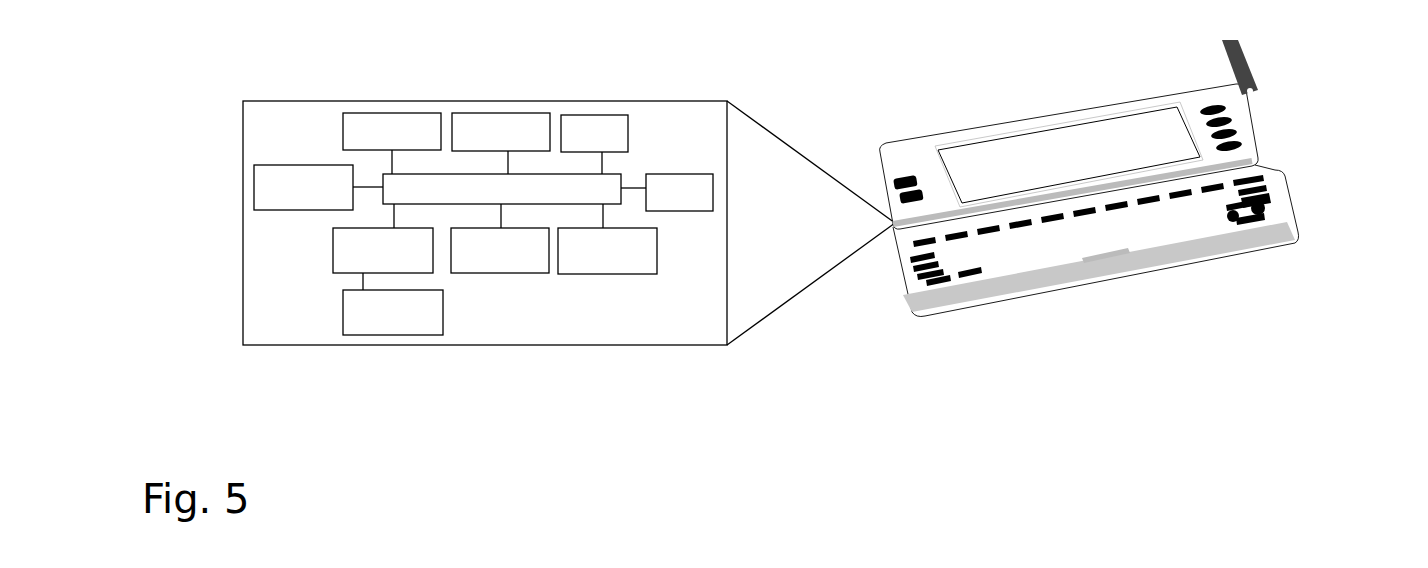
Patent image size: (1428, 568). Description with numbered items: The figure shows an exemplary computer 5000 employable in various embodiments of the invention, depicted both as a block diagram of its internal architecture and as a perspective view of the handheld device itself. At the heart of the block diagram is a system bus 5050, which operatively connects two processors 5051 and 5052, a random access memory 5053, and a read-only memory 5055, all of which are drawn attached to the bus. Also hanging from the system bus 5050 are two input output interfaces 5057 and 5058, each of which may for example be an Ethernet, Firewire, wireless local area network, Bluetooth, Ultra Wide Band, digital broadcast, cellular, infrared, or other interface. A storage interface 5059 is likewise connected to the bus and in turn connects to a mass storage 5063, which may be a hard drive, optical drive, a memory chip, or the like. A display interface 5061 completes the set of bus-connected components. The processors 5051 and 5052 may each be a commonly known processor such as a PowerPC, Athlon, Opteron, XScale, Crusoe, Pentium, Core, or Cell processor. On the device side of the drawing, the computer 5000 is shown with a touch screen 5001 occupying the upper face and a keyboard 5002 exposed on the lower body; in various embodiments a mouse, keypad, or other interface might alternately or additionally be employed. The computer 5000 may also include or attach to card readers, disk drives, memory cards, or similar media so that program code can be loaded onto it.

The computer 5000 is at (917, 315).
The touch screen 5001 is at (1018, 148).
The keyboard 5002 is at (1207, 205).
The system bus 5050 is at (499, 189).
The processor 5051 is at (392, 131).
The processor 5052 is at (501, 132).
The random access memory 5053 is at (594, 133).
The read-only memory 5055 is at (679, 192).
The input output (I/O) interface 5057 is at (607, 251).
The input output (I/O) interface 5058 is at (500, 250).
The storage interface 5059 is at (383, 259).
The display interface 5061 is at (303, 187).
The mass storage 5063 is at (393, 312).